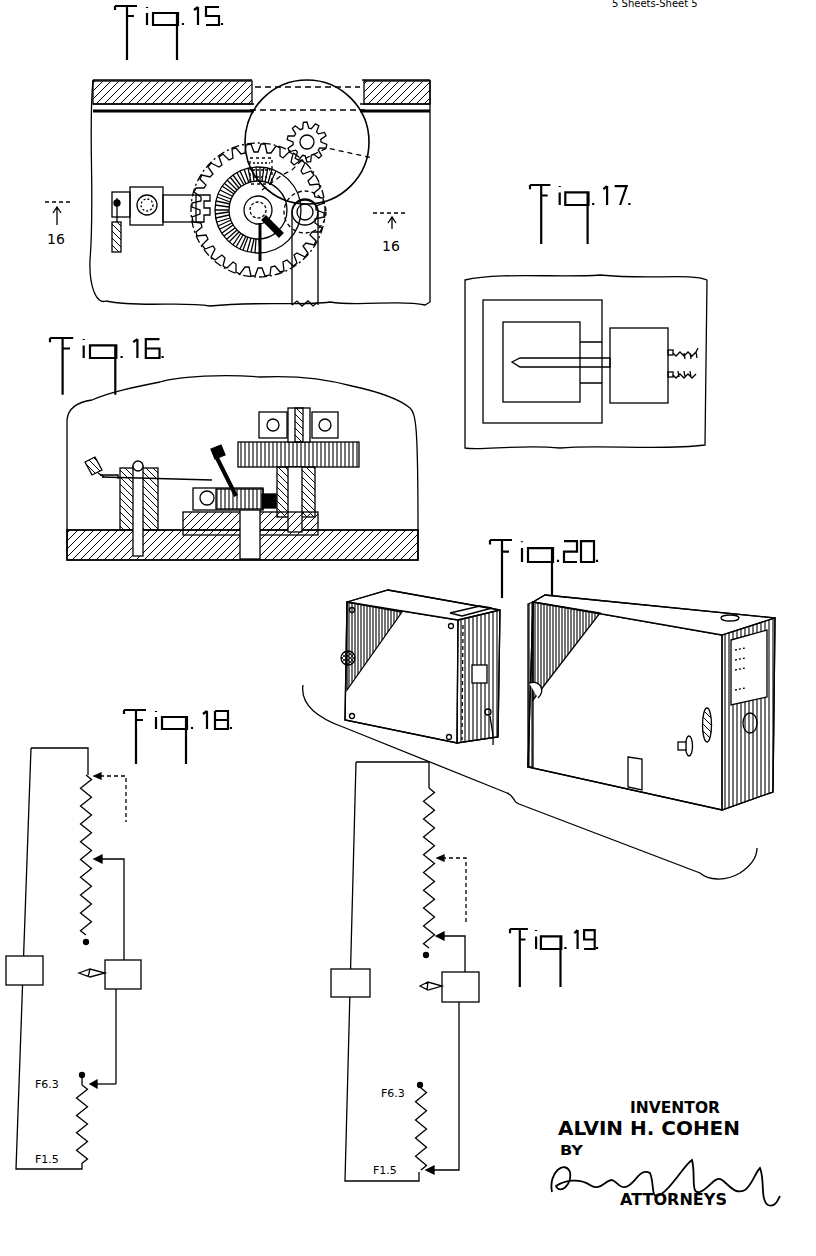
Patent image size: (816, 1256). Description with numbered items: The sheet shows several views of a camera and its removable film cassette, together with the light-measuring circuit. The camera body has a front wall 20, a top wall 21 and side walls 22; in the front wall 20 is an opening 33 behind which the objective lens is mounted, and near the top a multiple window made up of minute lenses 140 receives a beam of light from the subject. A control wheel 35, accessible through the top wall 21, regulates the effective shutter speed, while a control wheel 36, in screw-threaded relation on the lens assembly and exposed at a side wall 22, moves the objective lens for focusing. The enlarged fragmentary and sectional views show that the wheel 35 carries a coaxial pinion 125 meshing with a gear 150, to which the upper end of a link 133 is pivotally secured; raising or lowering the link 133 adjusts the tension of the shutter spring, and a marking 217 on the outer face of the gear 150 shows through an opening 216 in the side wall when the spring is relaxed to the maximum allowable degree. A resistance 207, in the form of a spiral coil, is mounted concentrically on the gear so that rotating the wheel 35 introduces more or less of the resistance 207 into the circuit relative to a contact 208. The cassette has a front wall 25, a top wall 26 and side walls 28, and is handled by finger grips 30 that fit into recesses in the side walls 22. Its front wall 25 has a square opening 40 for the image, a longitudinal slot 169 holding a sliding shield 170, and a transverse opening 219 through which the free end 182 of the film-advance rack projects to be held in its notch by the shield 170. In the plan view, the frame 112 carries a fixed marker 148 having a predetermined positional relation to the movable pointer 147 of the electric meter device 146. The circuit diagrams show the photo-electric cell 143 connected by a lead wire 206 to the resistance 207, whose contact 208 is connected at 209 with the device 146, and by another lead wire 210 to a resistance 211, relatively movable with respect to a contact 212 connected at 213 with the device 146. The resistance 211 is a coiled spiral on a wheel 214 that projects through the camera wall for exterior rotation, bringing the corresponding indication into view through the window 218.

In FIG. 20, the front wall 20 is at (740, 800).
In FIG. 15, the top wall 21 is at (398, 88).
In FIG. 20, the top wall 21 is at (638, 603).
In FIG. 15, the side walls 22 is at (416, 140).
In FIG. 16, the side walls 22 is at (310, 561).
In FIG. 20, the side walls 22 is at (678, 625).
In FIG. 20, the front wall 25 is at (470, 747).
In FIG. 20, the top wall 26 is at (424, 603).
In FIG. 20, the side walls 28 is at (402, 674).
In FIG. 20, the finger grips 30 is at (341, 658).
In FIG. 20, the opening 33 is at (749, 738).
In FIG. 15, the control wheel 35 is at (322, 82).
In FIG. 16, the control wheel 35 is at (360, 452).
In FIG. 20, the control wheel 35 is at (731, 615).
In FIG. 20, the control wheel 36 is at (702, 716).
In FIG. 20, the opening 40 is at (488, 677).
In FIG. 17, the frame 112 is at (596, 312).
In FIG. 15, the pinion 125 is at (333, 169).
In FIG. 16, the pinion 125 is at (303, 478).
In FIG. 15, the link 133 is at (312, 290).
In FIG. 16, the link 133 is at (316, 486).
In FIG. 20, the lenses 140 is at (757, 632).
In FIG. 18, the photo-electric cell 143 is at (34, 956).
In FIG. 19, the photo-electric cell 143 is at (333, 996).
In FIG. 17, the device 146 is at (650, 336).
In FIG. 18, the device 146 is at (141, 980).
In FIG. 19, the device 146 is at (463, 1003).
In FIG. 17, the movable pointer 147 is at (546, 368).
In FIG. 18, the movable pointer 147 is at (90, 978).
In FIG. 19, the movable pointer 147 is at (426, 990).
In FIG. 17, the fixed marker 148 is at (512, 362).
In FIG. 15, the gear 150 is at (321, 228).
In FIG. 16, the gear 150 is at (318, 523).
In FIG. 20, the slot 169 is at (468, 613).
In FIG. 20, the sliding shield 170 is at (474, 678).
In FIG. 20, the free end 182 is at (494, 745).
In FIG. 16, the lead wire 206 is at (218, 449).
In FIG. 18, the lead wire 206 is at (29, 888).
In FIG. 15, the resistance 207 is at (222, 258).
In FIG. 16, the resistance 207 is at (241, 545).
In FIG. 18, the resistance 207 is at (81, 814).
In FIG. 15, the contact 208 is at (180, 195).
In FIG. 16, the contact 208 is at (188, 481).
In FIG. 18, the contact 208 is at (121, 858).
In FIG. 19, the contact 208 is at (457, 935).
In FIG. 15, the connection 209 is at (122, 246).
In FIG. 16, the connection 209 is at (94, 461).
In FIG. 17, the connection 209 is at (698, 348).
In FIG. 18, the connection 209 is at (126, 890).
In FIG. 18, the lead wire 210 is at (22, 1031).
In FIG. 18, the resistance 211 is at (89, 1131).
In FIG. 19, the resistance 211 is at (413, 1122).
In FIG. 18, the contact 212 is at (112, 1090).
In FIG. 17, the connection 213 is at (696, 374).
In FIG. 18, the connection 213 is at (118, 1048).
In FIG. 20, the wheel 214 is at (687, 757).
In FIG. 15, the opening 216 is at (288, 151).
In FIG. 16, the opening 216 is at (257, 560).
In FIG. 15, the marking 217 is at (212, 167).
In FIG. 16, the marking 217 is at (203, 540).
In FIG. 20, the window 218 is at (680, 752).
In FIG. 20, the transverse opening 219 is at (492, 712).